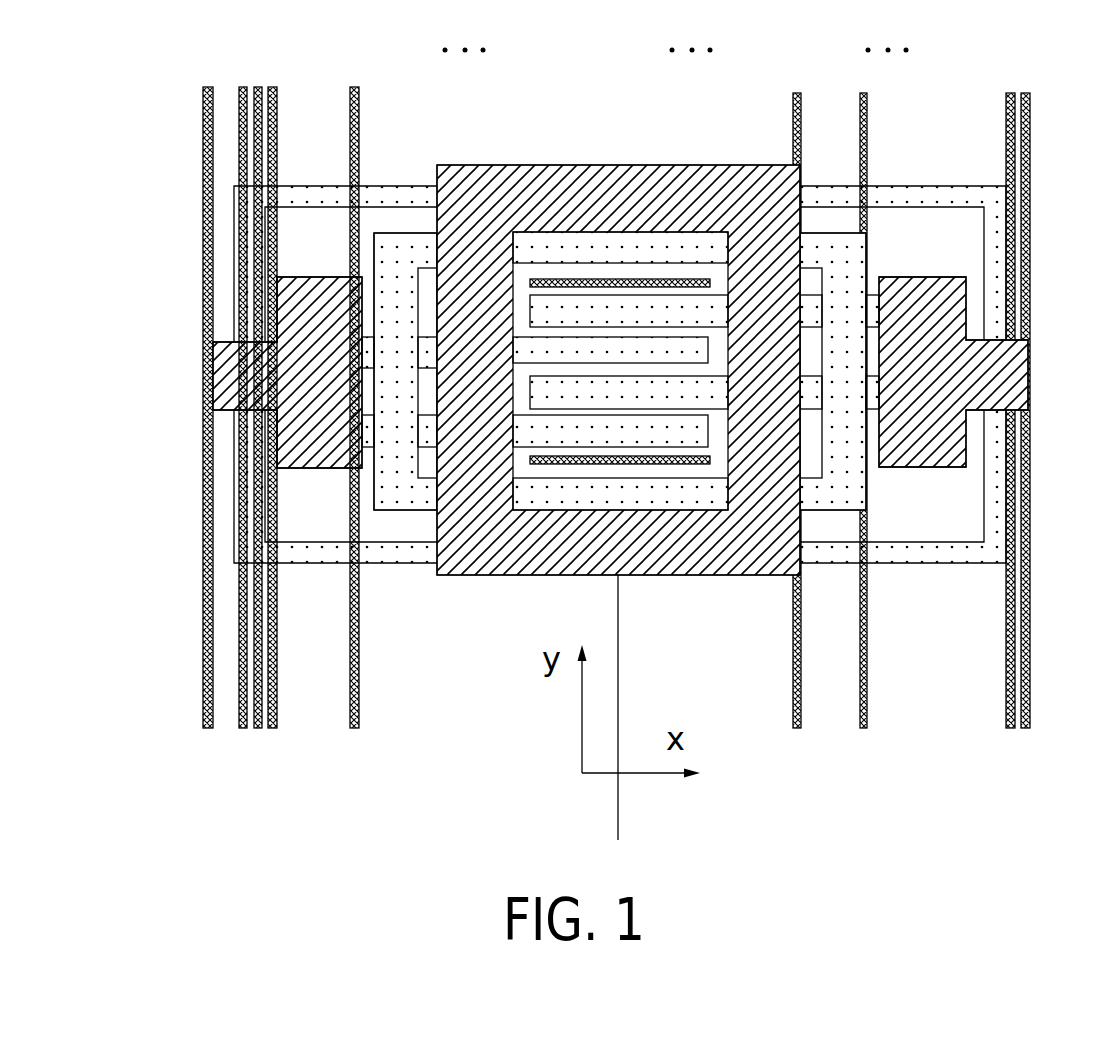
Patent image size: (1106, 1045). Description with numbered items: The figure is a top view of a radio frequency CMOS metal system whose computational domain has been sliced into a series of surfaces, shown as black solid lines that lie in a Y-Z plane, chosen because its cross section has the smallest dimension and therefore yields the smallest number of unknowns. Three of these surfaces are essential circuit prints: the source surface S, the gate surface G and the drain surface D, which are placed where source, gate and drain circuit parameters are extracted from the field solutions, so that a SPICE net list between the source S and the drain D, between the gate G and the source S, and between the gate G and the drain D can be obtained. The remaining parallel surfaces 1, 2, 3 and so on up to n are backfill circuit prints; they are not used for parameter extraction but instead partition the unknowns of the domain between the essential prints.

The source surface S is at (195, 78).
The drain surface D is at (1039, 81).
The gate surface G is at (618, 305).
The backfill circuit print surface 1 is at (232, 75).
The backfill circuit print surface 2 is at (256, 380).
The backfill circuit print surface 3 is at (297, 60).
The backfill circuit print surface n is at (1008, 379).